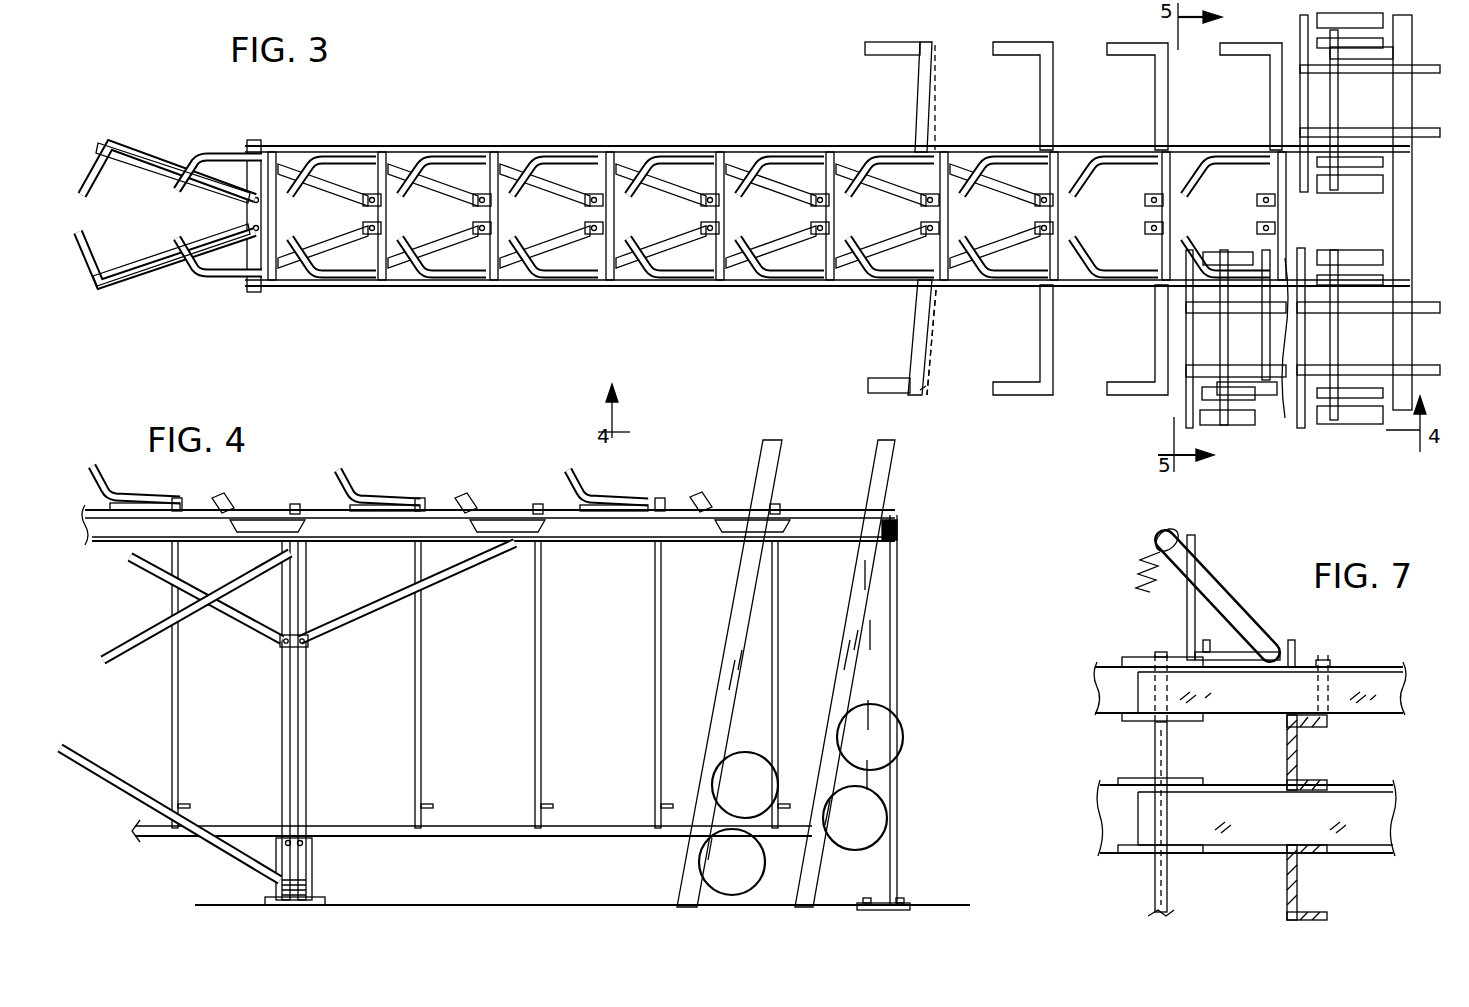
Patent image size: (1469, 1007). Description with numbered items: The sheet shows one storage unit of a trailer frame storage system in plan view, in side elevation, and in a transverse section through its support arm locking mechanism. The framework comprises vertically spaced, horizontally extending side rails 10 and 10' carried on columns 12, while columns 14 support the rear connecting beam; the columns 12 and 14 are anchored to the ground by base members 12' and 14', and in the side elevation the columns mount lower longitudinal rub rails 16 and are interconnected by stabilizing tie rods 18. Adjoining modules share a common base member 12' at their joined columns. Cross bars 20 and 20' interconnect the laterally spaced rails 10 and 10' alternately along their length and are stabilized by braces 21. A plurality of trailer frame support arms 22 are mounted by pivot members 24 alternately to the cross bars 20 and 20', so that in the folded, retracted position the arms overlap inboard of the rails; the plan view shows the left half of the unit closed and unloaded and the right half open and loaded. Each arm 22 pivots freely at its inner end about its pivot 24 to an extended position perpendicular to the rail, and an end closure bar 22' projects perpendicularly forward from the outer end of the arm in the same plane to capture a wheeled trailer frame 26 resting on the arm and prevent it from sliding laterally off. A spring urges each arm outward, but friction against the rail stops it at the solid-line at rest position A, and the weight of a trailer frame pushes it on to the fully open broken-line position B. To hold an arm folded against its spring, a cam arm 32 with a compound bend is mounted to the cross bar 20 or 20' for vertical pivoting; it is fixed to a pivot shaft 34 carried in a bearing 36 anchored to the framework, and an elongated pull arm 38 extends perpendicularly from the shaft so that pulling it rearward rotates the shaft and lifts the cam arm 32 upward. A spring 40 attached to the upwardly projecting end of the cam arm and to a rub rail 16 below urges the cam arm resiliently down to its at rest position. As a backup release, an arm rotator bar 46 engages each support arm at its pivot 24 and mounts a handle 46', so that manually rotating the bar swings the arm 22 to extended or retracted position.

In FIG. 3, the side rail 10 is at (827, 215).
In FIG. 4, the side rail 10 is at (488, 499).
In FIG. 7, the side rail 10 is at (1327, 752).
In FIG. 4, the lower side rail 10' is at (599, 568).
In FIG. 7, the lower side rail 10' is at (1324, 882).
In FIG. 4, the column 12 is at (291, 720).
In FIG. 4, the base member 12' is at (325, 871).
In FIG. 3, the column 14 is at (1325, 221).
In FIG. 4, the column 14 is at (913, 710).
In FIG. 4, the base member 14' is at (924, 888).
In FIG. 4, the rub rail 16 is at (475, 838).
In FIG. 4, the tie rod 18 is at (114, 660).
In FIG. 3, the cross bar 20 is at (566, 214).
In FIG. 4, the cross bar 20 is at (434, 477).
In FIG. 4, the cross bar 20' is at (519, 486).
In FIG. 4, the brace 21 is at (140, 572).
In FIG. 3, the trailer frame support arm 22 is at (710, 218).
In FIG. 7, the trailer frame support arm 22 is at (1250, 754).
In FIG. 3, the end closure bar 22' is at (553, 219).
In FIG. 4, the end closure bar 22' is at (550, 522).
In FIG. 3, the pivot member 24 is at (921, 200).
In FIG. 3, the wheeled trailer frame 26 is at (1370, 130).
In FIG. 4, the wheeled trailer frame 26 is at (732, 610).
In FIG. 3, the cam arm 32 is at (234, 284).
In FIG. 4, the cam arm 32 is at (351, 489).
In FIG. 7, the cam arm 32 is at (1234, 592).
In FIG. 7, the pivot shaft 34 is at (1238, 680).
In FIG. 7, the bearing 36 is at (1296, 645).
In FIG. 7, the pull arm 38 is at (1186, 609).
In FIG. 7, the spring 40 is at (1138, 564).
In FIG. 4, the arm rotator bar 46 is at (475, 684).
In FIG. 7, the arm rotator bar 46 is at (1118, 819).
In FIG. 4, the handle 46' is at (484, 790).
In FIG. 3, the at rest position A is at (936, 316).
In FIG. 3, the fully open position B is at (930, 386).